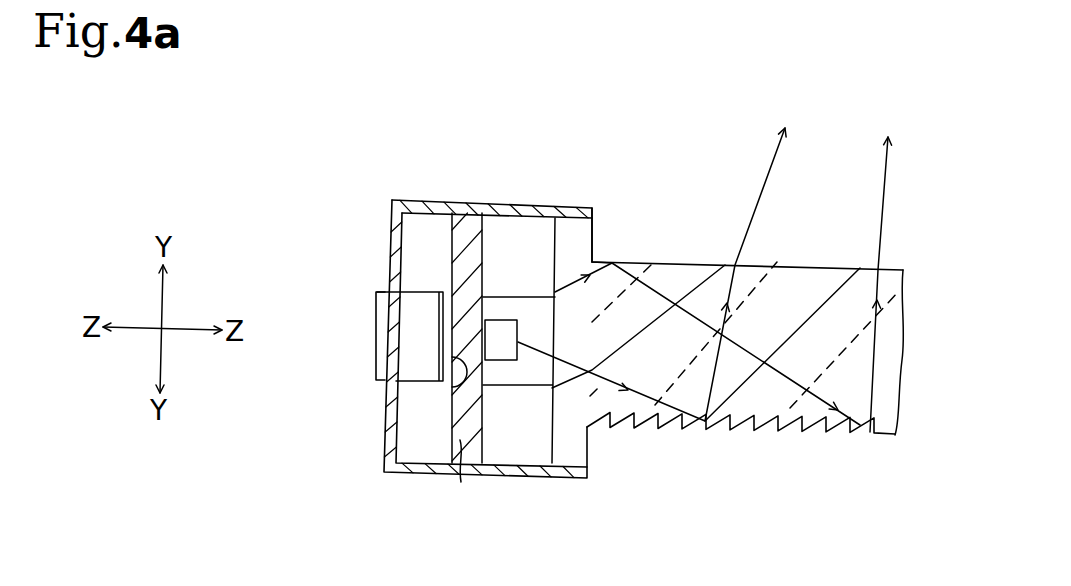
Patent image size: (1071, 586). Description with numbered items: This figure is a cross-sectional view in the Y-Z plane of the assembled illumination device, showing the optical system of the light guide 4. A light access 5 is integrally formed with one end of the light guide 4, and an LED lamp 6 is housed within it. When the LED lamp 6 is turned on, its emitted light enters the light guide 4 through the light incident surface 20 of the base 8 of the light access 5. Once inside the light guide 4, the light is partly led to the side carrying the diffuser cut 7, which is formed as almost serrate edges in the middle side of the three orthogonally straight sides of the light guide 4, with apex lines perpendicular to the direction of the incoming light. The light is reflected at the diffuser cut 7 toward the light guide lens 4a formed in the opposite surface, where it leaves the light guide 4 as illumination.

The light guide 4 is at (827, 257).
The light guide lens 4a is at (768, 267).
The light access 5 is at (514, 172).
The LED lamp 6 is at (500, 352).
The diffuser cut 7 is at (645, 419).
The base 8 is at (583, 237).
The light incident surface 20 is at (556, 307).